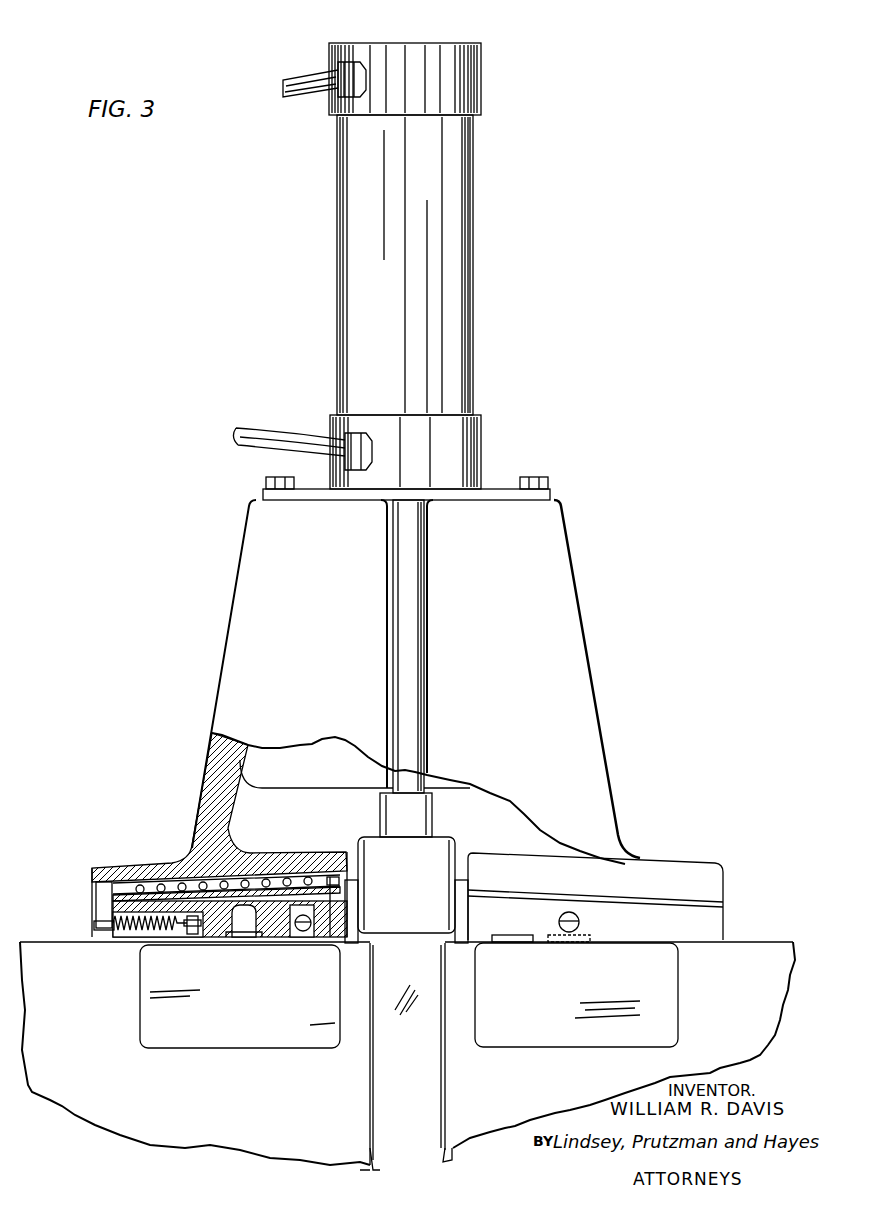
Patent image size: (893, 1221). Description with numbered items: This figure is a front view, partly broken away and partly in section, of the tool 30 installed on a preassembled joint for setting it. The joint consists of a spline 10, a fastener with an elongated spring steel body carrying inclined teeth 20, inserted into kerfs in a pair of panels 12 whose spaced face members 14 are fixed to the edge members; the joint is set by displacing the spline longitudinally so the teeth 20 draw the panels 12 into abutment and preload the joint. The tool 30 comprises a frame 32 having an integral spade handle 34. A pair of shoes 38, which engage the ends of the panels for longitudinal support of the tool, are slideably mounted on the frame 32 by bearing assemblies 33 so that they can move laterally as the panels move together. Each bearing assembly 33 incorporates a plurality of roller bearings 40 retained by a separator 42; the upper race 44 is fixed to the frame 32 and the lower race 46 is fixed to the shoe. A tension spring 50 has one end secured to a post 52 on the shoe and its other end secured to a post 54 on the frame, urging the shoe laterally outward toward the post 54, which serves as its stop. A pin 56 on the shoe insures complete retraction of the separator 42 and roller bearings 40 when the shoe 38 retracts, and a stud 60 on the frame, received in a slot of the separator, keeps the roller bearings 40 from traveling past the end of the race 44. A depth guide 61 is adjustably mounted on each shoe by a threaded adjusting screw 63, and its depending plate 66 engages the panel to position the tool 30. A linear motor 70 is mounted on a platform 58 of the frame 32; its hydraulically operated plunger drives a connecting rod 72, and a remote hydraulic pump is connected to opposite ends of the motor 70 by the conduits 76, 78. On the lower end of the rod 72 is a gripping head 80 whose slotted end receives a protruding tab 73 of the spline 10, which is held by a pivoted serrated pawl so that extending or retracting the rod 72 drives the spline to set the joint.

The spline 10 is at (406, 1068).
The panels 12 is at (408, 1016).
The face members 14 is at (58, 1100).
The teeth 20 is at (437, 1162).
The tool 30 is at (398, 682).
The frame 32 is at (583, 662).
The bearing assemblies 33 is at (152, 880).
The spade handle 34 is at (423, 582).
The shoes 38 is at (92, 940).
The roller bearings 40 is at (192, 858).
The separator 42 is at (224, 882).
The upper race 44 is at (317, 869).
The lower race 46 is at (263, 890).
The tension spring 50 is at (120, 931).
The post 52 is at (193, 935).
The post 54 is at (97, 899).
The pin 56 is at (346, 887).
The platform 58 is at (480, 501).
The stud 60 is at (311, 852).
The depth guide 61 is at (248, 1018).
The adjusting screw 63 is at (304, 932).
The depending plate 66 is at (144, 1012).
The linear motor 70 is at (466, 254).
The connecting rod 72 is at (392, 779).
The tab 73 is at (458, 886).
The air conduit 76 is at (247, 431).
The air conduit 78 is at (296, 74).
The gripping head 80 is at (417, 864).